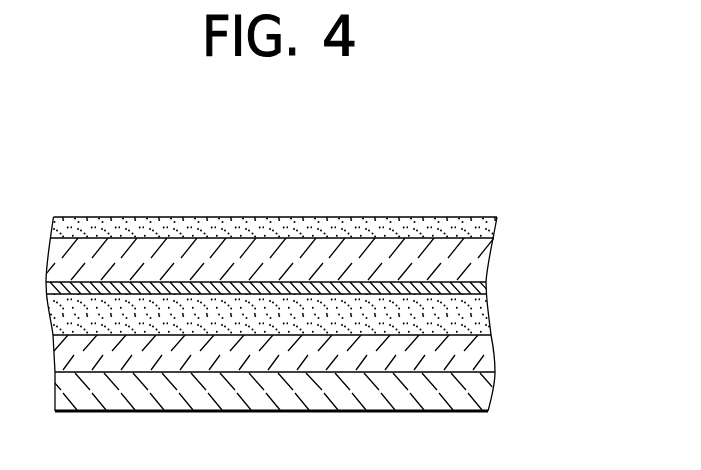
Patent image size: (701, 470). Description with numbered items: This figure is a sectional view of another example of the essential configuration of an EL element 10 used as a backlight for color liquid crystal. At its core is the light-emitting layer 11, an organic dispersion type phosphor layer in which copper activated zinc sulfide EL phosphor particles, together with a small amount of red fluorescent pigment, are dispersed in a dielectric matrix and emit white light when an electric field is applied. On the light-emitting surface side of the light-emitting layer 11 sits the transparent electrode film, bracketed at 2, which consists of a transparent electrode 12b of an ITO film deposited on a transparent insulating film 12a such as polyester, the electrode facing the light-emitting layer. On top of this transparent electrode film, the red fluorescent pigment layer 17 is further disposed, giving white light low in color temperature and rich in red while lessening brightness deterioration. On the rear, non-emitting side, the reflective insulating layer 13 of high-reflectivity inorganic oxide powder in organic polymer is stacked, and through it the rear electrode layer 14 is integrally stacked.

The EL element 10 is at (228, 200).
The red fluorescent pigment layer 17 is at (495, 228).
The layered structure 2 is at (328, 268).
The transparent insulating film 12a is at (478, 265).
The transparent electrode 12b is at (477, 287).
The light-emitting layer 11 is at (483, 313).
The reflective insulating layer 13 is at (483, 353).
The rear electrode layer 14 is at (482, 390).